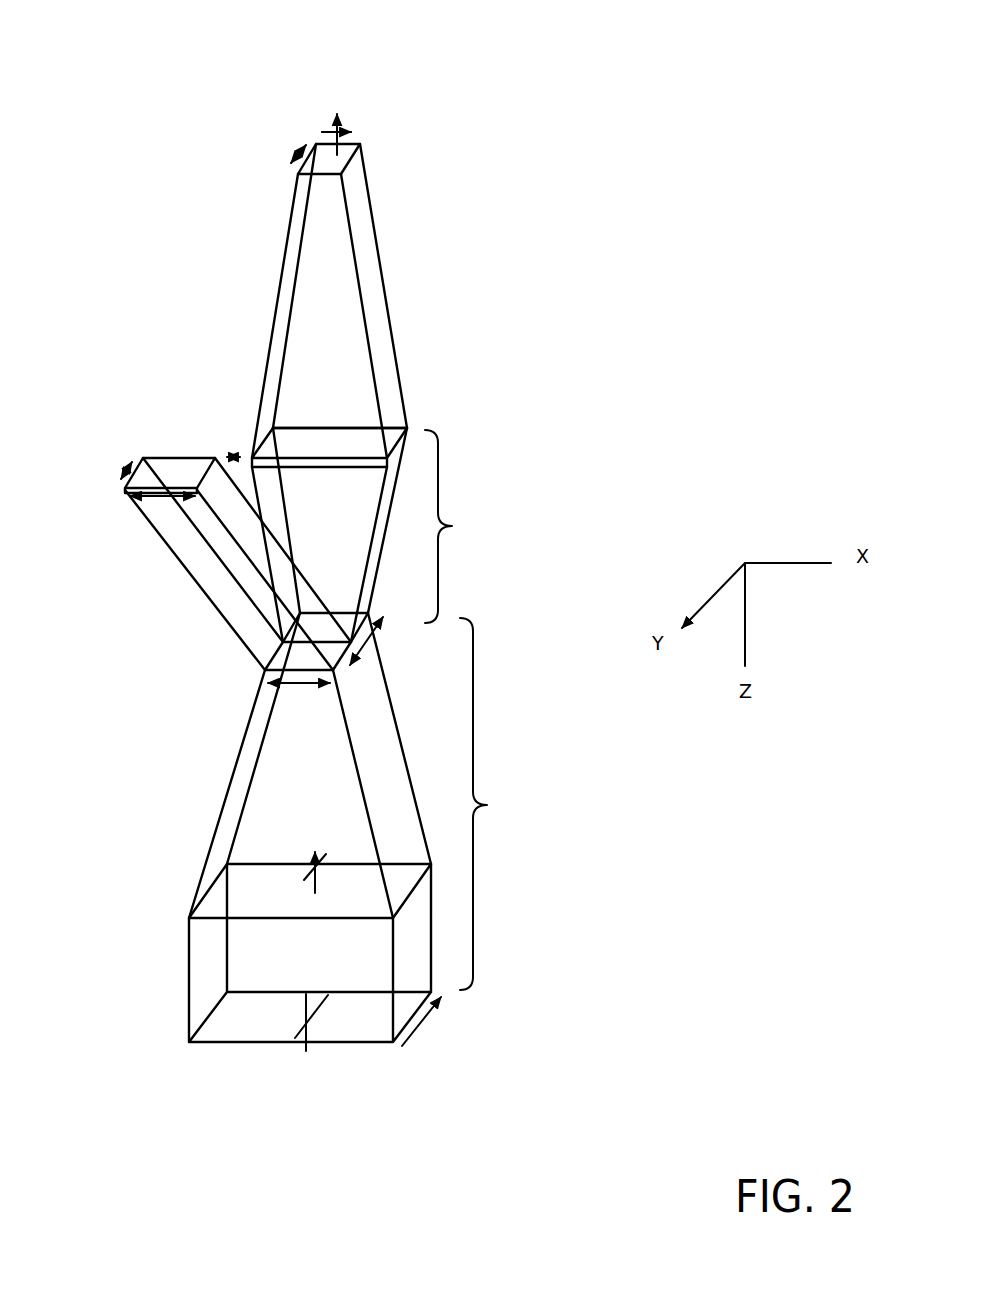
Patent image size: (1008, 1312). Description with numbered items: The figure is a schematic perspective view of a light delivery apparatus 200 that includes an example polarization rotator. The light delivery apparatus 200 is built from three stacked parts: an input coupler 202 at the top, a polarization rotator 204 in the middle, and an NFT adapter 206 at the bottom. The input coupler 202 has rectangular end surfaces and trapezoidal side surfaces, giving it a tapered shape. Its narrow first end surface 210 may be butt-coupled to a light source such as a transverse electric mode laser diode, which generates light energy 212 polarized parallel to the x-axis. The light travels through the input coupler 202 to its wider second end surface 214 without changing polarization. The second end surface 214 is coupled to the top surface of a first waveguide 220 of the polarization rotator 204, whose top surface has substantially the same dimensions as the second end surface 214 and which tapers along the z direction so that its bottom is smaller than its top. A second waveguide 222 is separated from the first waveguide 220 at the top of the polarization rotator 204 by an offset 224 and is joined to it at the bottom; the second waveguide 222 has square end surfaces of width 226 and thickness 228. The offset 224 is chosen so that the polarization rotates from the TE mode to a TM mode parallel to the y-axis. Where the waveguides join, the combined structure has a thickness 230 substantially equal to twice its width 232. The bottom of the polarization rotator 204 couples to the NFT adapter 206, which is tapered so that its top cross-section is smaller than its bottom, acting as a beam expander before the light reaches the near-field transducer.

The light delivery apparatus 200 is at (150, 55).
The input coupler 202 is at (391, 303).
The polarization rotator 204 is at (466, 527).
The NFT adapter 206 is at (500, 805).
The first end surface 210 is at (362, 138).
The light energy 212 is at (338, 104).
The second end surface 214 is at (313, 444).
The first waveguide 220 is at (397, 499).
The second waveguide 222 is at (207, 598).
The offset 224 is at (229, 450).
The width 226 is at (125, 468).
The thickness 228 is at (163, 498).
The thickness 230 is at (370, 646).
The width 232 is at (300, 682).